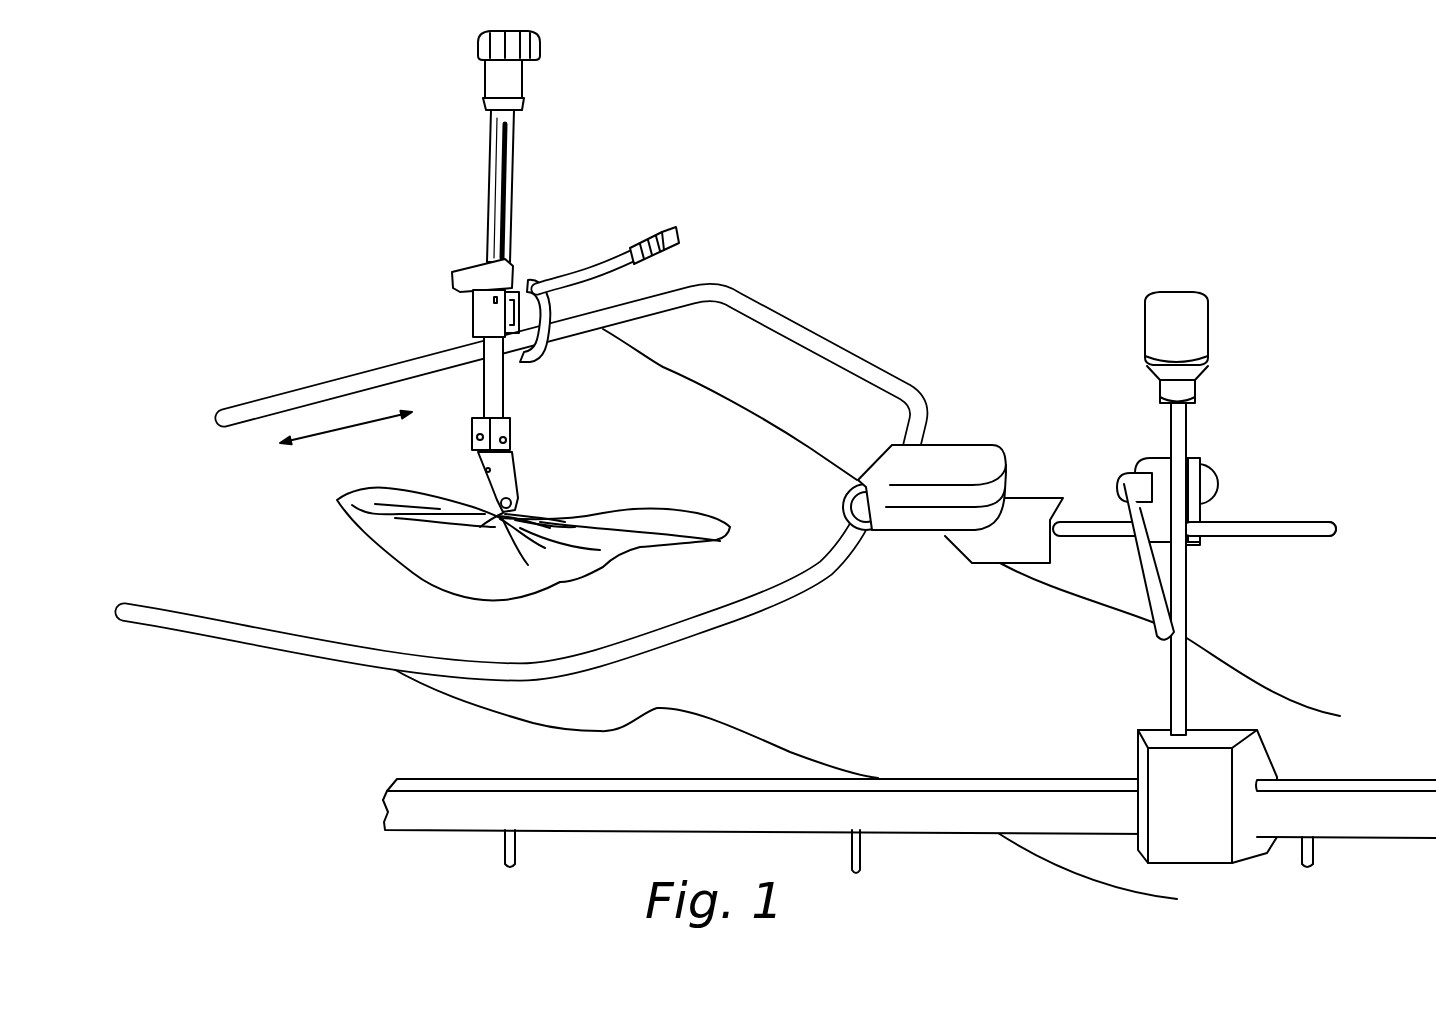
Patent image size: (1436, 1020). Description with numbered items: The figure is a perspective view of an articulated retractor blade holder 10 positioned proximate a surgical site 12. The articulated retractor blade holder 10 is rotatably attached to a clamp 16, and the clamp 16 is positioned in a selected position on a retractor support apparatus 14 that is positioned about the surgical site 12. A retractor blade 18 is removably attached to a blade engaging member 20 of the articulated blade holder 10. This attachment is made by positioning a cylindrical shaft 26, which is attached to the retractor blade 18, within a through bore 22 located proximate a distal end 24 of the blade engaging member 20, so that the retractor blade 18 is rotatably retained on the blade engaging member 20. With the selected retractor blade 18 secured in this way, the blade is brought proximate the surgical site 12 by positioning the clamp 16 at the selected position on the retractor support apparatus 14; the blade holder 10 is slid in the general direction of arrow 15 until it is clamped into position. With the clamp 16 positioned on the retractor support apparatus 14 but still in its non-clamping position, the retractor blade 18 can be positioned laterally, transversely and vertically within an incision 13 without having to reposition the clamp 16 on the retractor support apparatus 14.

The articulated retractor blade holder 10 is at (554, 231).
The surgical site 12 is at (650, 530).
The incision 13 is at (610, 520).
The retractor support apparatus 14 is at (371, 385).
The arrow 15 is at (366, 426).
The clamp 16 is at (590, 264).
The retractor blade 18 is at (533, 522).
The blade engaging member 20 is at (503, 483).
The through bore 22 is at (487, 518).
The distal end 24 is at (497, 518).
The cylindrical shaft 26 is at (506, 520).